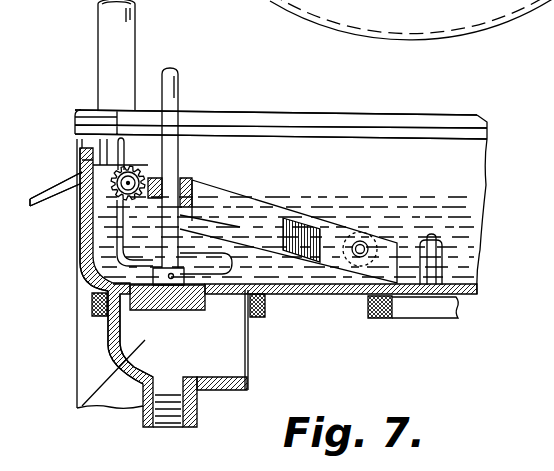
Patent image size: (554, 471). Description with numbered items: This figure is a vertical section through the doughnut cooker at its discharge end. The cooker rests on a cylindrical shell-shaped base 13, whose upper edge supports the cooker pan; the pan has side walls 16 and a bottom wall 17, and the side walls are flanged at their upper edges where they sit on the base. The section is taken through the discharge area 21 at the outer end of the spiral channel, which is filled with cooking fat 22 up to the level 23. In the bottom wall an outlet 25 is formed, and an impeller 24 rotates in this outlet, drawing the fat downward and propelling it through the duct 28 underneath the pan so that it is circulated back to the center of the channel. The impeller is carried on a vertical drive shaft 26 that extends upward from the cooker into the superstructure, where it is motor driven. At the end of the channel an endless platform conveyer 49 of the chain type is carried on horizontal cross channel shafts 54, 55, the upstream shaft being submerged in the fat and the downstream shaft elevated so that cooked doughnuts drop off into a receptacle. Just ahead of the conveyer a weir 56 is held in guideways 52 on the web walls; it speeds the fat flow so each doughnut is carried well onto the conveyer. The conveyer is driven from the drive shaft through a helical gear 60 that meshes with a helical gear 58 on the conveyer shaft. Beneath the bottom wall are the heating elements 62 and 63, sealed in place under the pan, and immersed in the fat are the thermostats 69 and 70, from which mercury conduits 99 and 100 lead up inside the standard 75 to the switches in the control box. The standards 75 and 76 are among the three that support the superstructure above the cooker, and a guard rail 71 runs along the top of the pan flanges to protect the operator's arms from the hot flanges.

The base 13 is at (74, 365).
The side walls 16 is at (85, 256).
The bottom wall 17 is at (329, 297).
The discharge area 21 is at (295, 186).
The cooking fat 22 is at (474, 218).
The fat level 23 is at (468, 201).
The impeller 24 is at (198, 302).
The outlet 25 is at (110, 322).
The drive shaft 26 is at (181, 93).
The duct 28 is at (78, 406).
The endless platform conveyer 49 is at (257, 196).
The guideways 52 is at (444, 262).
The cross channel shaft 54 is at (362, 242).
The conveyer shaft 55 is at (137, 181).
The weir 56 is at (429, 238).
The helical gear 58 is at (82, 160).
The helical gear 60 is at (193, 181).
The heating element 62 is at (92, 303).
The heating element 63 is at (413, 312).
The thermostat 69 is at (230, 270).
The thermostat 70 is at (250, 238).
The guard rail 71 is at (473, 123).
The standard 75 is at (97, 46).
The standard 76 is at (375, 20).
The mercury conduit 99 is at (80, 218).
The mercury conduit 100 is at (80, 238).